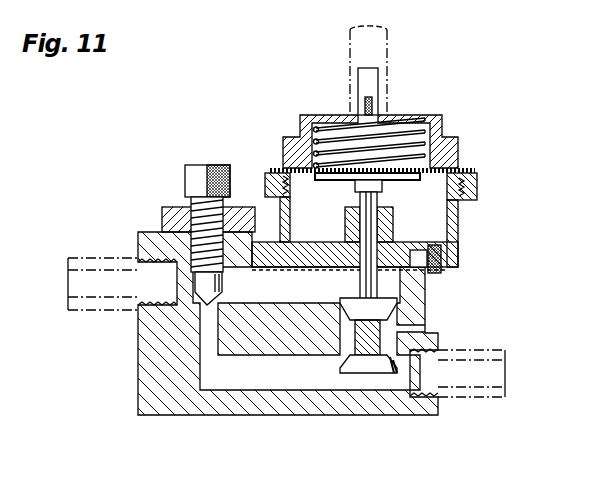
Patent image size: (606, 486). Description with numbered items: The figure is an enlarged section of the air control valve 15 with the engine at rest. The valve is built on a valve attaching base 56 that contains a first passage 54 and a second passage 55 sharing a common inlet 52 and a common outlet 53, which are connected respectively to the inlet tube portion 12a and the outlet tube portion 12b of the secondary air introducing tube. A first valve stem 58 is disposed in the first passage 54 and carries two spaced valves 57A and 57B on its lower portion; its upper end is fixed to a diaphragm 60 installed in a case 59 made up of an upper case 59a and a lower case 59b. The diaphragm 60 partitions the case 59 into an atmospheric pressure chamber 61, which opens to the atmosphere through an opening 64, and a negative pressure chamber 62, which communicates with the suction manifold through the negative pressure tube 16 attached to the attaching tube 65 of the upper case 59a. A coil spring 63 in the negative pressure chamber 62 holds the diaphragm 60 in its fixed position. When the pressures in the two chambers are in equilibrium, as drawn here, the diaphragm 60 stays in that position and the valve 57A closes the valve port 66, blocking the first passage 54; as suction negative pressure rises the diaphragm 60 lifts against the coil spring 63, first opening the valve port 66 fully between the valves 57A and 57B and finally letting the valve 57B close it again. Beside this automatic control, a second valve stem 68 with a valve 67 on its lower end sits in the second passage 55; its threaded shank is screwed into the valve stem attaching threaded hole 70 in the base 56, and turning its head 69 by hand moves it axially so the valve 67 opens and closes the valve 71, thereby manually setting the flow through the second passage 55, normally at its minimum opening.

The air control valve 15 is at (497, 192).
The negative pressure tube 16 is at (350, 66).
The attaching tube 65 is at (370, 82).
The negative pressure chamber 62 is at (396, 132).
The coil spring 63 is at (325, 135).
The opening 64 is at (283, 185).
The case 59 is at (468, 157).
The upper case 59a is at (440, 128).
The lower case 59b is at (458, 208).
The diaphragm 60 is at (438, 174).
The atmospheric pressure chamber 61 is at (436, 227).
The head 69 is at (203, 170).
The second valve stem 68 is at (193, 205).
The valve stem attaching threaded hole 70 is at (192, 228).
The first passage 54 is at (242, 278).
The inlet tube portion 12a is at (78, 258).
The outlet tube portion 12b is at (482, 398).
The inlet 52 is at (138, 308).
The outlet 53 is at (432, 375).
The valve 67 is at (196, 300).
The valve attaching base 56 is at (138, 408).
The valve 71 is at (208, 342).
The second passage 55 is at (297, 375).
The valve 57A is at (358, 308).
The valve 57B is at (368, 364).
The first valve stem 58 is at (425, 288).
The valve port 66 is at (425, 329).